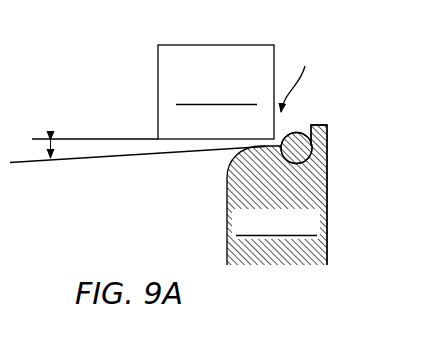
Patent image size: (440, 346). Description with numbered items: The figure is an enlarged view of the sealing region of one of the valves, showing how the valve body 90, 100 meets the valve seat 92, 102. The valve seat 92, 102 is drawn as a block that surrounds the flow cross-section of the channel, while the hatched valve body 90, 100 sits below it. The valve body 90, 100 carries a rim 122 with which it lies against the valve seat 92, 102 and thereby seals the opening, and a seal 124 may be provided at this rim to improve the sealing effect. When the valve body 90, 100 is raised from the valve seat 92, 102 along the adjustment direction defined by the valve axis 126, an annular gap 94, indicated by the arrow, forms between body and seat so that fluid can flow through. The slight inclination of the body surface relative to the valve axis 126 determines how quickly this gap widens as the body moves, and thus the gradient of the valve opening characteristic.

The first valve body 90 is at (277, 195).
The second valve body 100 is at (277, 195).
The first valve seat 92 is at (153, 92).
The second valve seat 102 is at (153, 92).
The annular gap 94 is at (299, 78).
The rim 122 is at (319, 148).
The seal 124 is at (88, 153).
The valve axis 126 is at (80, 138).